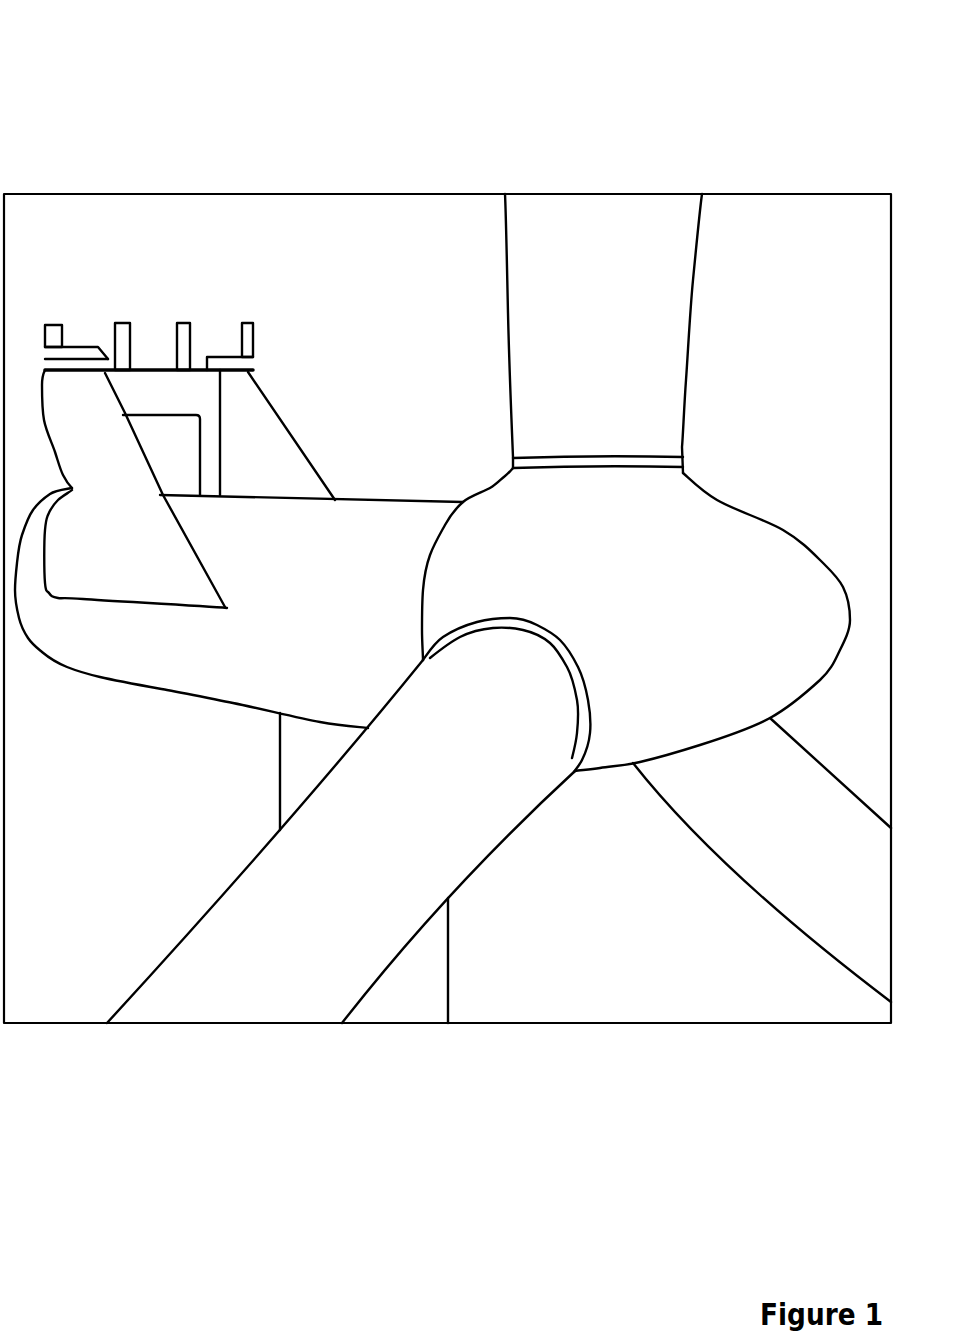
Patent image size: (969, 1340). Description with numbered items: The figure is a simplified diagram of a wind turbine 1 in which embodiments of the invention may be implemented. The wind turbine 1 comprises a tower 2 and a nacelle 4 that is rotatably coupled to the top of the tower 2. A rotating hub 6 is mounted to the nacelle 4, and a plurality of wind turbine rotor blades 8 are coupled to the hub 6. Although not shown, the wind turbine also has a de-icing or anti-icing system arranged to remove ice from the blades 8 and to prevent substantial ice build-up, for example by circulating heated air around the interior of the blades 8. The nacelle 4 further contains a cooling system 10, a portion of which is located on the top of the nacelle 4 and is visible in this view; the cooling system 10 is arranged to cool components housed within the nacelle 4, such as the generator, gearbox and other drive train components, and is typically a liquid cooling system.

The wind turbine 1 is at (118, 90).
The tower 2 is at (453, 987).
The nacelle 4 is at (378, 500).
The rotating hub 6 is at (778, 548).
The wind turbine rotor blades 8 is at (680, 343).
The cooling system 10 is at (257, 413).